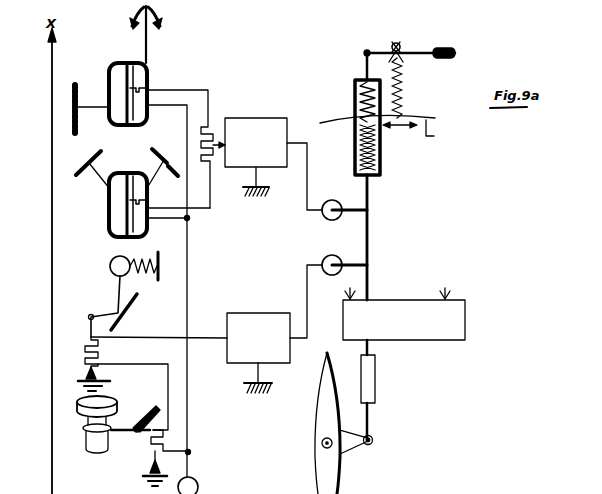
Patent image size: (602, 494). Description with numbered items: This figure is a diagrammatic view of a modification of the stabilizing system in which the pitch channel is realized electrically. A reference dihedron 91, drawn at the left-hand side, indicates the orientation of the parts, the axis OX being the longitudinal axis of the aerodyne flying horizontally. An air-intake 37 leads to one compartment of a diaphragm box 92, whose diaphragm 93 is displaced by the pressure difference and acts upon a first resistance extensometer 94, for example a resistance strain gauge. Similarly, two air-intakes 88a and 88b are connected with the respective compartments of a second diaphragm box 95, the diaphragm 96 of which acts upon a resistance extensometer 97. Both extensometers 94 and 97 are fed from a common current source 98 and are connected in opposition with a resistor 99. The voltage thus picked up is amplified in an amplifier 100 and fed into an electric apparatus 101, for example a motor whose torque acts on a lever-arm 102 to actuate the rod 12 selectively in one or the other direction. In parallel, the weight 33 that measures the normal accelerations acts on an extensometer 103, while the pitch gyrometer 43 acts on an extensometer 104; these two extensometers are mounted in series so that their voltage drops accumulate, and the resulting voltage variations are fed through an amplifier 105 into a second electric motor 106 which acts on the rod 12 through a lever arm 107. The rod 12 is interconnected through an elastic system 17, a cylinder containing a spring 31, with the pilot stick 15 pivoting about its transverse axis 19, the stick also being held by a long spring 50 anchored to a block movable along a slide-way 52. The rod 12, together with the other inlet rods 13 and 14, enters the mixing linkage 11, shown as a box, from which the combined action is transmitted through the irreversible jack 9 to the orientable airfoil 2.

The orientable airfoil 2 is at (325, 422).
The irreversible jack 9 is at (376, 378).
The mixing linkage 11 is at (452, 319).
The inlet rod 12 is at (370, 232).
The inlet rod 13 is at (447, 290).
The inlet rod 14 is at (349, 292).
The pilot stick 15 is at (406, 57).
The elastic system 17 is at (381, 130).
The transverse pivoting axis 19 is at (393, 45).
The spring 31 is at (75, 108).
The weight 33 is at (110, 265).
The air-intake 37 is at (158, 12).
The pitch gyrometer 43 is at (83, 403).
The long spring 50 is at (402, 93).
The slide-way 52 is at (387, 129).
The air-intake 88a is at (86, 168).
The air-intake 88b is at (164, 161).
The reference dihedron 91 is at (54, 457).
The diaphragm box 92 is at (115, 68).
The diaphragm 93 is at (133, 64).
The resistance extensometer 94 is at (143, 83).
The diaphragm box 95 is at (126, 174).
The diaphragm 96 is at (109, 209).
The resistance extensometer 97 is at (145, 196).
The current source 98 is at (197, 482).
The resistor 99 is at (218, 160).
The amplifier 100 is at (248, 126).
The electric apparatus 101 is at (327, 201).
The lever-arm 102 is at (362, 213).
The extensometer 103 is at (88, 348).
The extensometer 104 is at (166, 440).
The amplifier 105 is at (252, 322).
The second electric motor 106 is at (328, 256).
The lever arm 107 is at (371, 263).